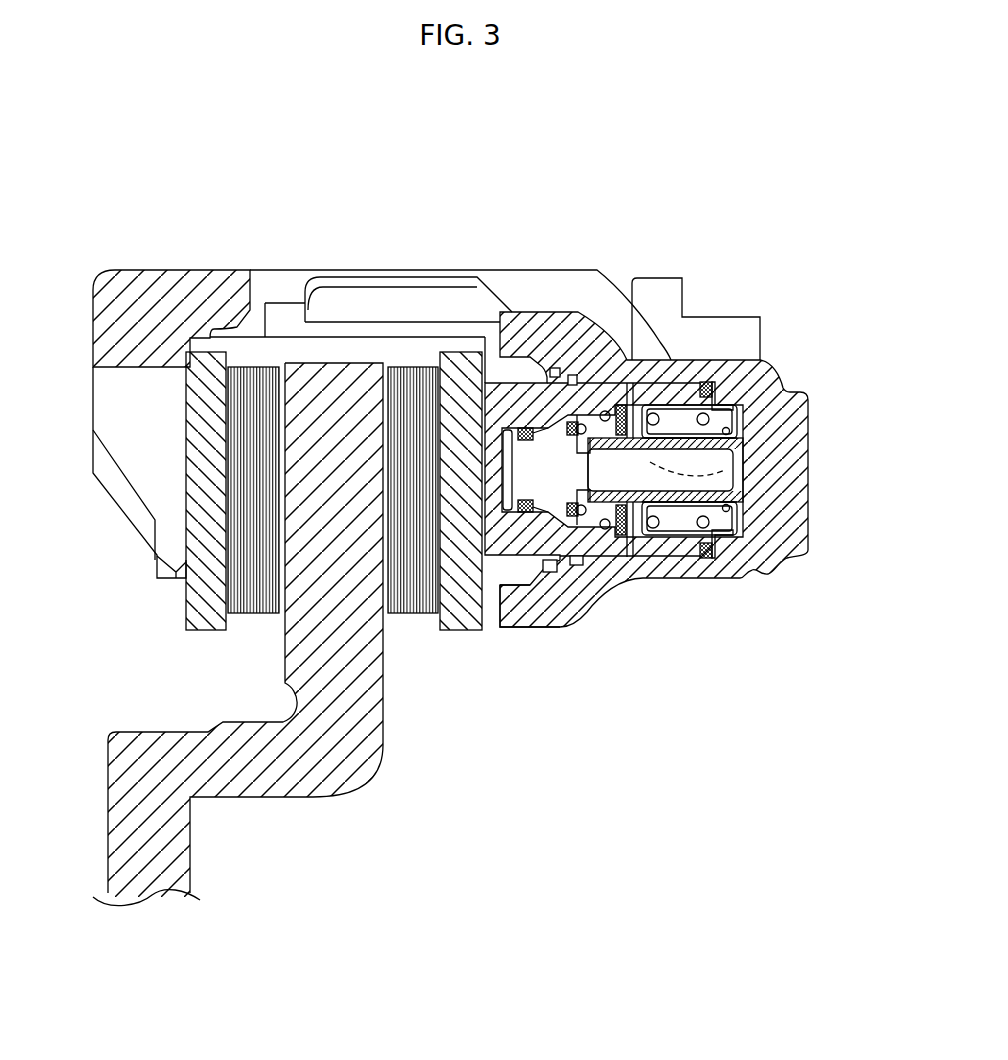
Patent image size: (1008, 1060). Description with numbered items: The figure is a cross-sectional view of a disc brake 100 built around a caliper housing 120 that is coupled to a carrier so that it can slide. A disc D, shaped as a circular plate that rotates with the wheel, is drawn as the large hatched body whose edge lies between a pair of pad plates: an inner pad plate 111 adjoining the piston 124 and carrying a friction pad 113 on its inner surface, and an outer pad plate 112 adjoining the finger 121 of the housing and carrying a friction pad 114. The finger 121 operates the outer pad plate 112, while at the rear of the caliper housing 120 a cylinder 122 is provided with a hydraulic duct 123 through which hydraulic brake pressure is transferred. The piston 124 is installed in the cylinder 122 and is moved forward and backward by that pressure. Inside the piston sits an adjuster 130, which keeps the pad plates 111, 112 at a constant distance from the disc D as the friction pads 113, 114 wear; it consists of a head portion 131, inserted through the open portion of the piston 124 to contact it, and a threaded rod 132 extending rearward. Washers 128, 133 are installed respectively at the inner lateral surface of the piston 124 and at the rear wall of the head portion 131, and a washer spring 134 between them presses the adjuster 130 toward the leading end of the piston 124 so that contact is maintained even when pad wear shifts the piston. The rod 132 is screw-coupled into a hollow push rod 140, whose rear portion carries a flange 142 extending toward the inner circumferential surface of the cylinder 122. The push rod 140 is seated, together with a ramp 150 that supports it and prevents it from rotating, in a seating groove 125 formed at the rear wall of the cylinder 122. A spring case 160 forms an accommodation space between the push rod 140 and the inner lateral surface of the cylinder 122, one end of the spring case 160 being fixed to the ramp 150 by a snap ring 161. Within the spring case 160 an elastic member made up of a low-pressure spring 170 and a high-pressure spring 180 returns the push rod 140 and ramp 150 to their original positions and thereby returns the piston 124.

The disc brake 100 is at (646, 203).
The inner pad plate 111 is at (455, 632).
The outer pad plate 112 is at (205, 632).
The friction pad 113 is at (410, 613).
The friction pad 114 is at (250, 613).
The caliper housing 120 is at (388, 262).
The finger 121 is at (97, 402).
The cylinder 122 is at (782, 550).
The hydraulic duct 123 is at (690, 362).
The piston 124 is at (520, 548).
The seating groove 125 is at (742, 468).
The washer 128 is at (672, 375).
The adjuster 130 is at (647, 679).
The head portion 131 is at (550, 492).
The rod 132 is at (640, 545).
The washer 133 is at (608, 405).
The washer spring 134 is at (640, 400).
The push rod 140 is at (700, 548).
The flange 142 is at (737, 510).
The ramp 150 is at (712, 545).
The spring case 160 is at (660, 535).
The snap ring 161 is at (718, 388).
The low-pressure spring 170 is at (737, 435).
The high-pressure spring 180 is at (715, 418).
The disc D is at (345, 775).